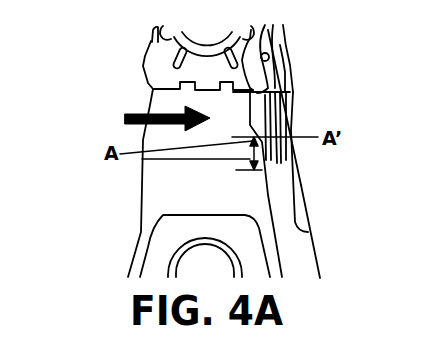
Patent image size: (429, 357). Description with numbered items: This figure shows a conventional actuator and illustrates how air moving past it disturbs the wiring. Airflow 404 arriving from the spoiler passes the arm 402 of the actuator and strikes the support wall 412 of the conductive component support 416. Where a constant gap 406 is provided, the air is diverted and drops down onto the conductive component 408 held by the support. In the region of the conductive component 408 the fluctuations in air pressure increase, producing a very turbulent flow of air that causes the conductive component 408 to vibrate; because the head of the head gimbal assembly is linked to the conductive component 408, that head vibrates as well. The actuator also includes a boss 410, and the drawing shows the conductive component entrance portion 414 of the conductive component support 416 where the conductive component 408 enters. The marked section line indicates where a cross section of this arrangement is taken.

The arm 402 is at (152, 103).
The airflow 404 is at (122, 123).
The constant gap 406 is at (252, 143).
The conductive component 408 is at (289, 56).
The boss 410 is at (289, 92).
The support wall 412 is at (292, 168).
The conductive component entrance portion 414 is at (300, 233).
The conductive component support 416 is at (298, 259).